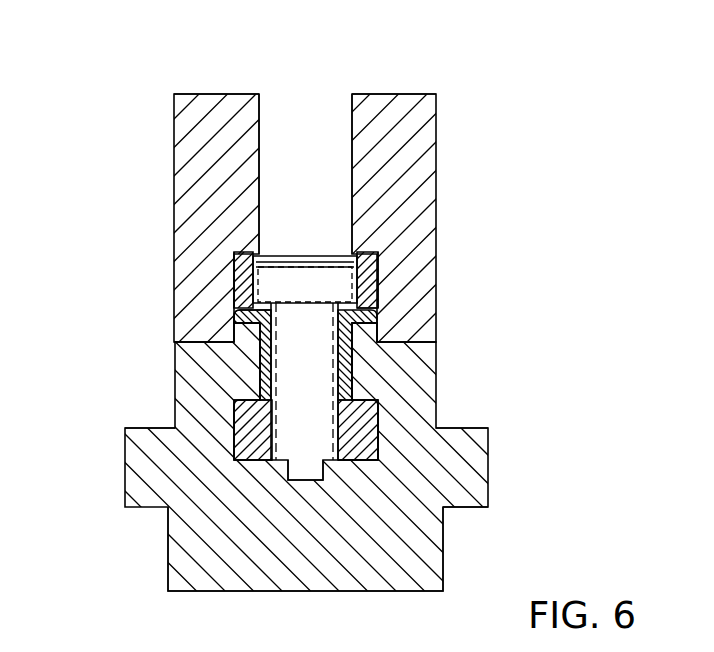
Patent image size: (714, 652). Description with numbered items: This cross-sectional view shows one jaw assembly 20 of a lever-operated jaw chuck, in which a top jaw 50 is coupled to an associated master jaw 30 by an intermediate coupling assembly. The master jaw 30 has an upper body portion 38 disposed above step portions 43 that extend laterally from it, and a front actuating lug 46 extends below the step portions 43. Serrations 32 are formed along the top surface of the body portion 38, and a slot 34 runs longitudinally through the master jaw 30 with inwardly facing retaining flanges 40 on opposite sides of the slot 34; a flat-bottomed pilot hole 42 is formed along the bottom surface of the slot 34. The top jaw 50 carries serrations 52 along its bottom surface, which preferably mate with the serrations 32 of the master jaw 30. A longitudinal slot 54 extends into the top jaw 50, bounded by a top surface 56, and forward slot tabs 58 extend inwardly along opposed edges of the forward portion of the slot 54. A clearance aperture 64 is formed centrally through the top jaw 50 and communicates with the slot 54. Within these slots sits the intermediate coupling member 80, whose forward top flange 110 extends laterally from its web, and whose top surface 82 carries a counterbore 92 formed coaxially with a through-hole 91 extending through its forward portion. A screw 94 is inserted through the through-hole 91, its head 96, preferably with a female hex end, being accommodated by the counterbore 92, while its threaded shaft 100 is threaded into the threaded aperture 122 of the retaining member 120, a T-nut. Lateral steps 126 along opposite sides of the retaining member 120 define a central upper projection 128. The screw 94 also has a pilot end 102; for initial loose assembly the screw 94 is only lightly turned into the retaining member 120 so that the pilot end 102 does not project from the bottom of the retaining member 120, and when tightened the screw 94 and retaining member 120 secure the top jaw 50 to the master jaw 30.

The jaw assembly 20 is at (451, 57).
The top jaw 50 is at (441, 90).
The clearance aperture 64 is at (351, 122).
The top surface 82 is at (237, 253).
The counterbore 92 is at (262, 284).
The head 96 is at (338, 261).
The intermediate coupling member 80 is at (382, 262).
The forward top flange 110 is at (233, 280).
The screw 94 is at (372, 318).
The top surface of the slot 56 is at (233, 268).
The longitudinal slot 54 is at (243, 310).
The forward slot tabs 58 is at (243, 326).
The serrations 32 is at (175, 334).
The serrations 52 is at (378, 348).
The retaining flanges 40 is at (243, 388).
The central upper projection 128 is at (378, 386).
The retaining member 120 is at (393, 397).
The upper body portion 38 is at (395, 423).
The slot 34 is at (233, 430).
The master jaw 30 is at (492, 446).
The step portions 43 is at (133, 452).
The lateral steps 126 is at (237, 445).
The threaded shaft 100 is at (382, 458).
The pilot end 102 is at (395, 505).
The through-hole 91 is at (273, 353).
The threaded aperture 122 is at (282, 430).
The flat-bottomed pilot hole 42 is at (303, 475).
The front actuating lug 46 is at (382, 583).